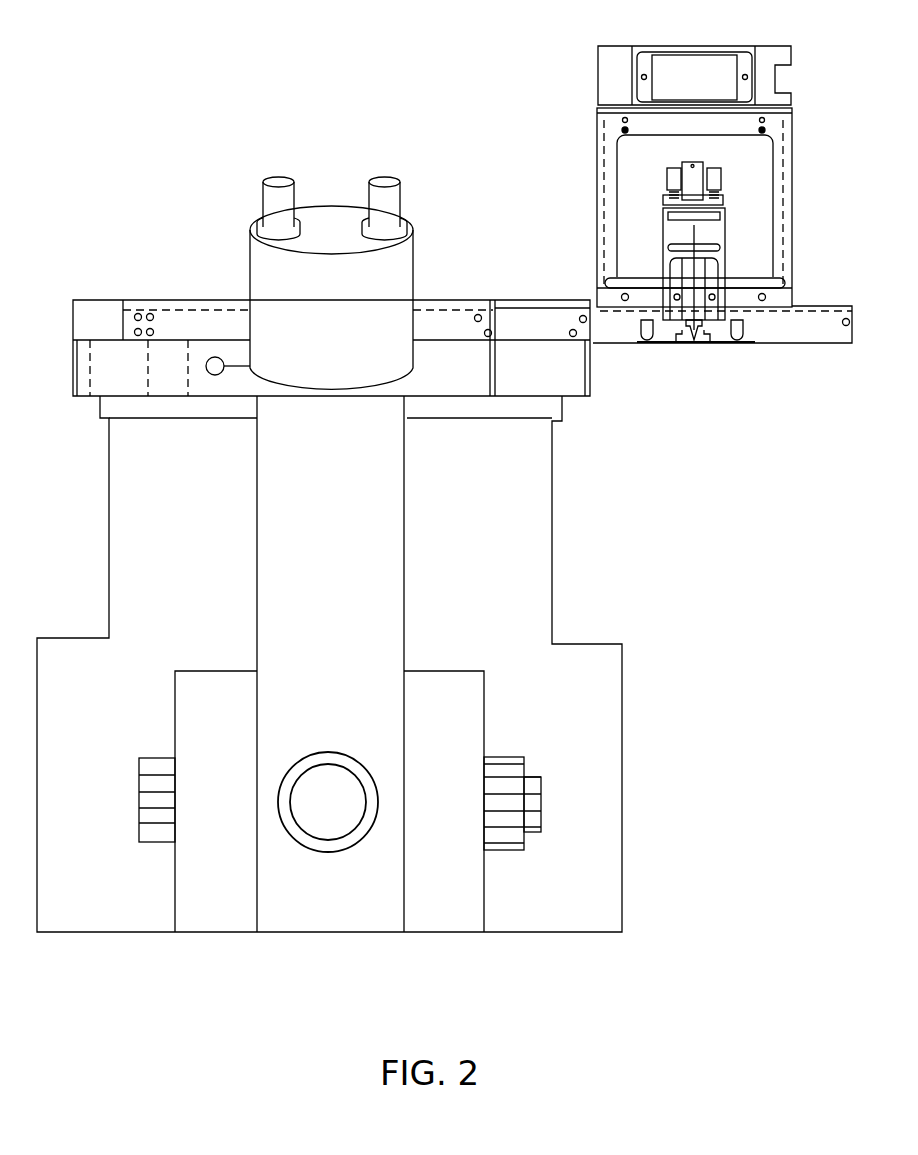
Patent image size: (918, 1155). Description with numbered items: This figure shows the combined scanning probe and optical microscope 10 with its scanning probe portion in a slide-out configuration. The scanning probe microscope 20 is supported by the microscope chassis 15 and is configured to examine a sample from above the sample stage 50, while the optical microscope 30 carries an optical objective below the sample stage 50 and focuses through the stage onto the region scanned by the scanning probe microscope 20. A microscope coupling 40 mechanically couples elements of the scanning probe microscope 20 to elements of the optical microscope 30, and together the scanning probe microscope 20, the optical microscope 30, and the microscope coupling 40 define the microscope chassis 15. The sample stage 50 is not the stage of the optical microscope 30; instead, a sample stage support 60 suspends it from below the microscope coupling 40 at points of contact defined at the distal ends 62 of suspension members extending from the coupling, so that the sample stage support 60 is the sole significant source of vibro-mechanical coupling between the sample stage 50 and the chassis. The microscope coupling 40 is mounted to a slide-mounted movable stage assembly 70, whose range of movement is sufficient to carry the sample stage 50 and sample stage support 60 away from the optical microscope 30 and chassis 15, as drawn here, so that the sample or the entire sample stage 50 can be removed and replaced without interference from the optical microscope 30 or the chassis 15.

The combined scanning probe and optical microscope 10 is at (214, 118).
The microscope chassis 15 is at (552, 530).
The scanning probe microscope 20 is at (597, 130).
The optical microscope 30 is at (413, 255).
The microscope coupling 40 is at (598, 304).
The sample stage 50 is at (691, 344).
The sample stage support 60 is at (760, 372).
The distal ends 62 is at (645, 345).
The slide-mounted movable stage assembly 70 is at (828, 306).